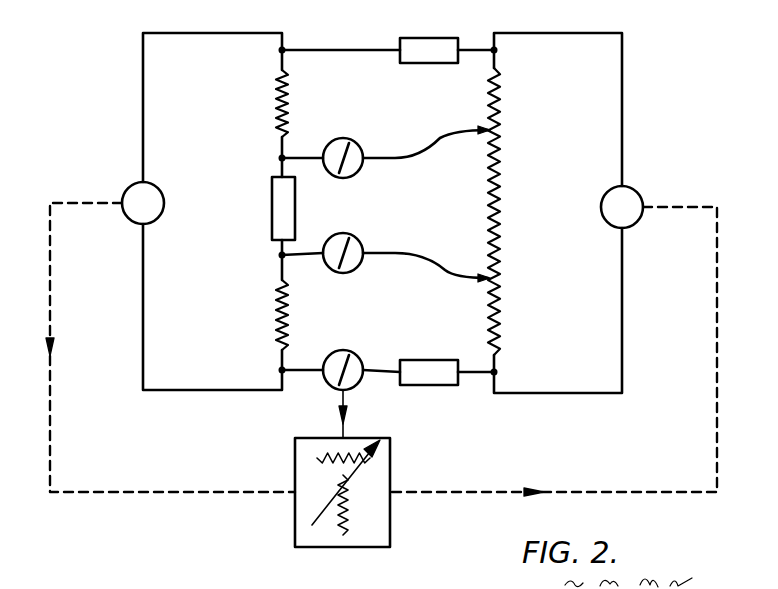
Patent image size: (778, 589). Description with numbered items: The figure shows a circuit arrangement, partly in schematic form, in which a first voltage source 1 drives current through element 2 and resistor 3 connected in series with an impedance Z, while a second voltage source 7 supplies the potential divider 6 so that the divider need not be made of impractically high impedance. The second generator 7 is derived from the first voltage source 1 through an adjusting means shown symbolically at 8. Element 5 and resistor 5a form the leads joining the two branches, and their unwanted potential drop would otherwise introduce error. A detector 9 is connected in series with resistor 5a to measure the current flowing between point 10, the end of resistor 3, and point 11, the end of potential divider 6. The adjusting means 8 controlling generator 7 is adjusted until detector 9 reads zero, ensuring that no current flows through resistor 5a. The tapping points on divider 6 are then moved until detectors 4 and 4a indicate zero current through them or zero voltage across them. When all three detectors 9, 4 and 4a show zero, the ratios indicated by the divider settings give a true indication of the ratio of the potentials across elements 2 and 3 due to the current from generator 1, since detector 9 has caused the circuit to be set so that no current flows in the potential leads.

The first voltage source 1 is at (128, 190).
The element 2 is at (278, 97).
The resistor 3 is at (277, 305).
The impedance Z is at (283, 208).
The detector 4 is at (364, 140).
The detector 4a is at (362, 268).
The element 5 is at (446, 22).
The resistor 5a is at (428, 387).
The potential divider 6 is at (497, 197).
The second voltage source 7 is at (631, 188).
The adjusting means 8 is at (390, 527).
The detector 9 is at (359, 357).
The point 10 is at (280, 370).
The point 11 is at (498, 372).